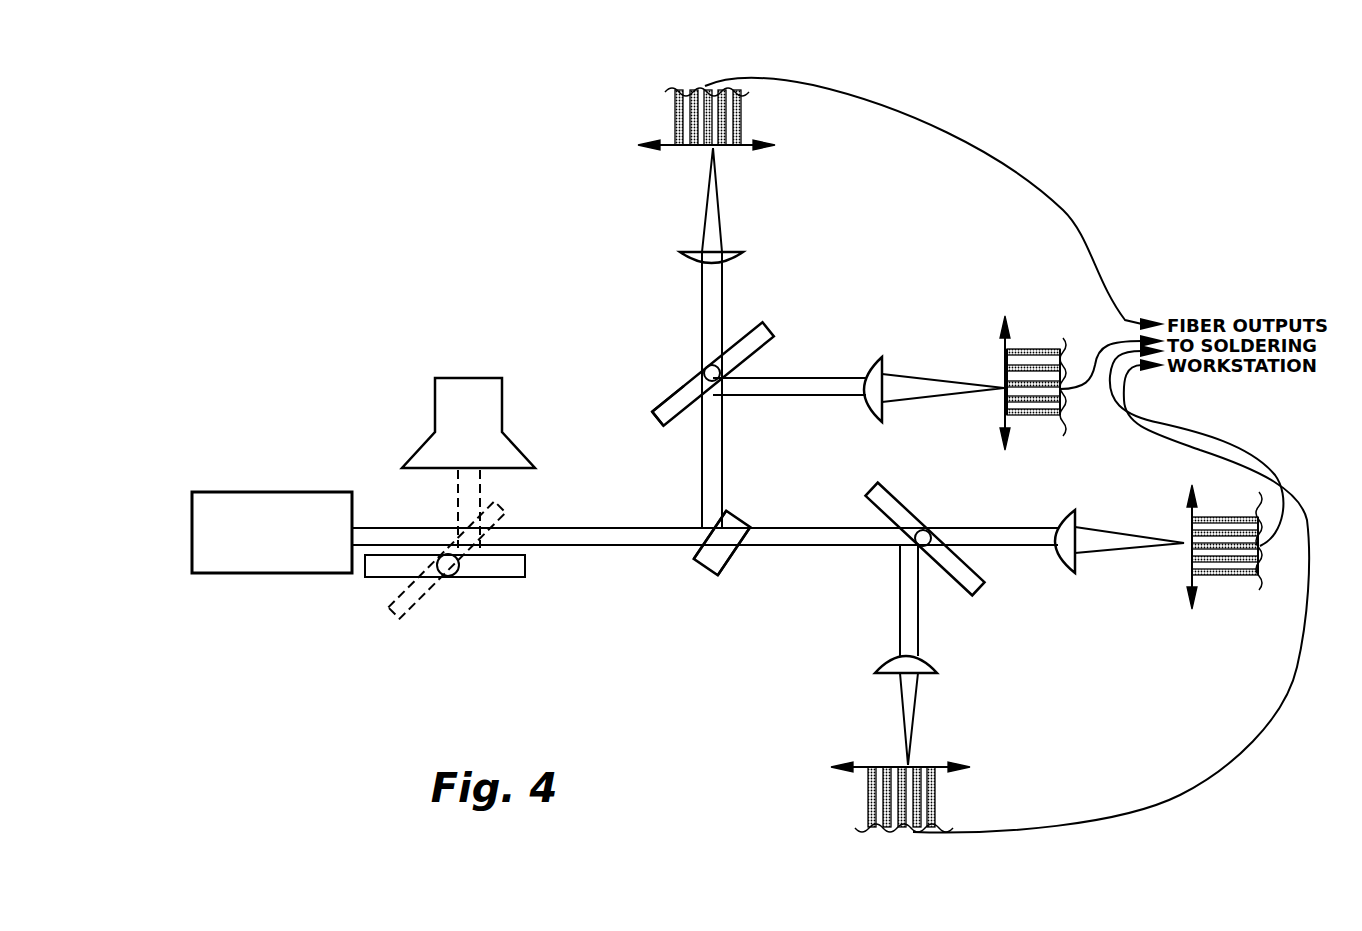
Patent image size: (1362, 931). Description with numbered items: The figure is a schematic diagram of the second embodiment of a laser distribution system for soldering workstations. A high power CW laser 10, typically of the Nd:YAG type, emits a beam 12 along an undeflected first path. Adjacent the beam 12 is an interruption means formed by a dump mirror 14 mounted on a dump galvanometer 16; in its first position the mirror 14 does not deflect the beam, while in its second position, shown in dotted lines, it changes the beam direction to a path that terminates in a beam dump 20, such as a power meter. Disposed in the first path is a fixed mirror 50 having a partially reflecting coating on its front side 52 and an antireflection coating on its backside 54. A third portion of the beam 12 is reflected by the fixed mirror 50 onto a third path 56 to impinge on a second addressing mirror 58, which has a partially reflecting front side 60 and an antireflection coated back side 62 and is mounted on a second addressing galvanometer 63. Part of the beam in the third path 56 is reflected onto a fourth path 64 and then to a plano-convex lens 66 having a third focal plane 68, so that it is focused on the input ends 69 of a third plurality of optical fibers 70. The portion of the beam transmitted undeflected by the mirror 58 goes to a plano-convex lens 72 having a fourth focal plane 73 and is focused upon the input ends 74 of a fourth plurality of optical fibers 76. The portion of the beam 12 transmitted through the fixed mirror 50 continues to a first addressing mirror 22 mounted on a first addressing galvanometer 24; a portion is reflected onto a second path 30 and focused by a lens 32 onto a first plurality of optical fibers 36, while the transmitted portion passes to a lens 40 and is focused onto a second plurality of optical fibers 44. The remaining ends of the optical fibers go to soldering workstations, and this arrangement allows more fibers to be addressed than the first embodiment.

The high power CW laser 10 is at (272, 572).
The beam 12 is at (407, 528).
The dump mirror 14 is at (512, 576).
The dump galvanometer 16 is at (462, 575).
The beam dump 20 is at (500, 410).
The first addressing mirror 22 is at (978, 592).
The first addressing galvanometer 24 is at (930, 534).
The second path 30 is at (898, 621).
The first lens 32 is at (880, 659).
The first plurality of optical fibers 36 is at (937, 805).
The second lens 40 is at (1080, 510).
The second plurality of optical fibers 44 is at (1230, 578).
The fixed mirror 50 is at (700, 566).
The front side of fixed mirror 52 is at (727, 514).
The backside of fixed mirror 54 is at (730, 566).
The third path 56 is at (702, 297).
The second addressing mirror 58 is at (770, 323).
The front side of second addressing mirror 60 is at (676, 420).
The back side of second addressing mirror 62 is at (680, 388).
The second addressing galvanometer 63 is at (718, 386).
The fourth path 64 is at (818, 383).
The third lens 66 is at (875, 357).
The third focal plane 68 is at (1003, 430).
The input ends of third optical fibers 69 is at (1015, 420).
The third plurality of optical fibers 70 is at (1020, 350).
The fourth lens 72 is at (688, 258).
The fourth focal plane 73 is at (684, 150).
The input ends of fourth optical fibers 74 is at (675, 141).
The fourth plurality of optical fibers 76 is at (742, 123).